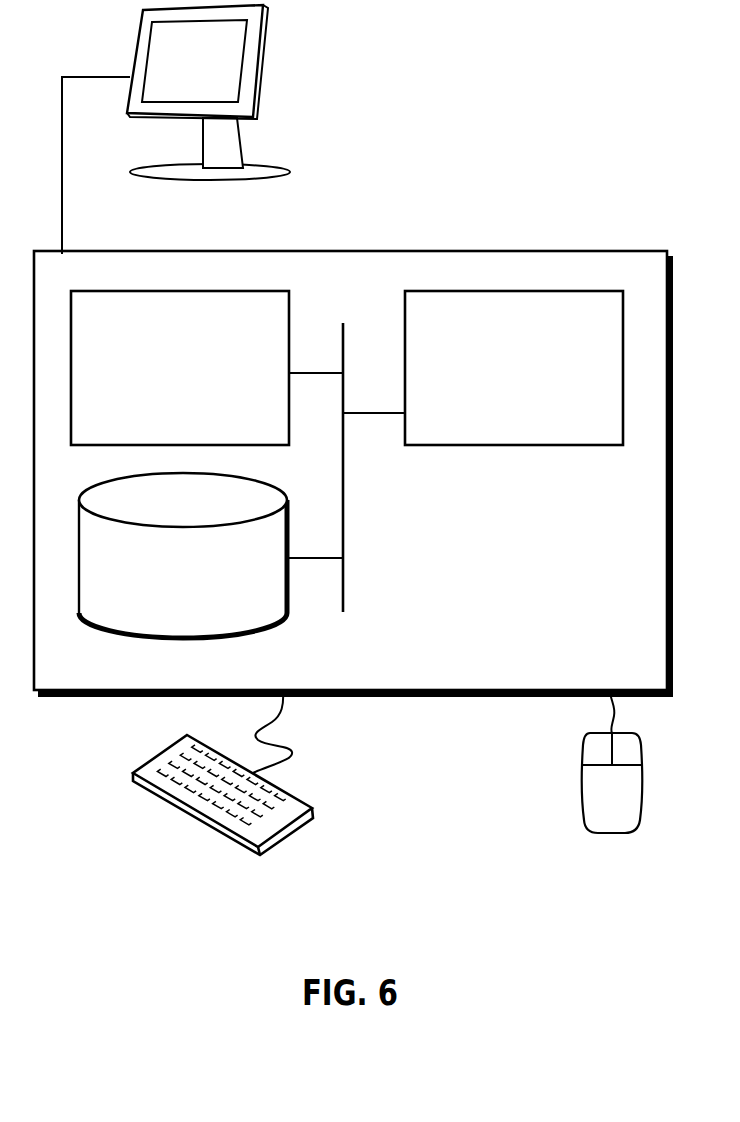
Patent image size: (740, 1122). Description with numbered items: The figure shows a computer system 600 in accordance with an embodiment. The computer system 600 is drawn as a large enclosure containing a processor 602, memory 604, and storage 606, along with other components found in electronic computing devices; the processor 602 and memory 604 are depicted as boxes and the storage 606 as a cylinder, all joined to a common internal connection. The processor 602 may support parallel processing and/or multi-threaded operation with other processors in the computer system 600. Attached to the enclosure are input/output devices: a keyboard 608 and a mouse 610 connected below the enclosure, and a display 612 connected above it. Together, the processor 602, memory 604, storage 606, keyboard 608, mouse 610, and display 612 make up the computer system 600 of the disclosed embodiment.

The computer system 600 is at (395, 228).
The processor 602 is at (497, 379).
The memory 604 is at (160, 379).
The storage 606 is at (167, 583).
The keyboard 608 is at (153, 798).
The mouse 610 is at (592, 804).
The display 612 is at (176, 129).